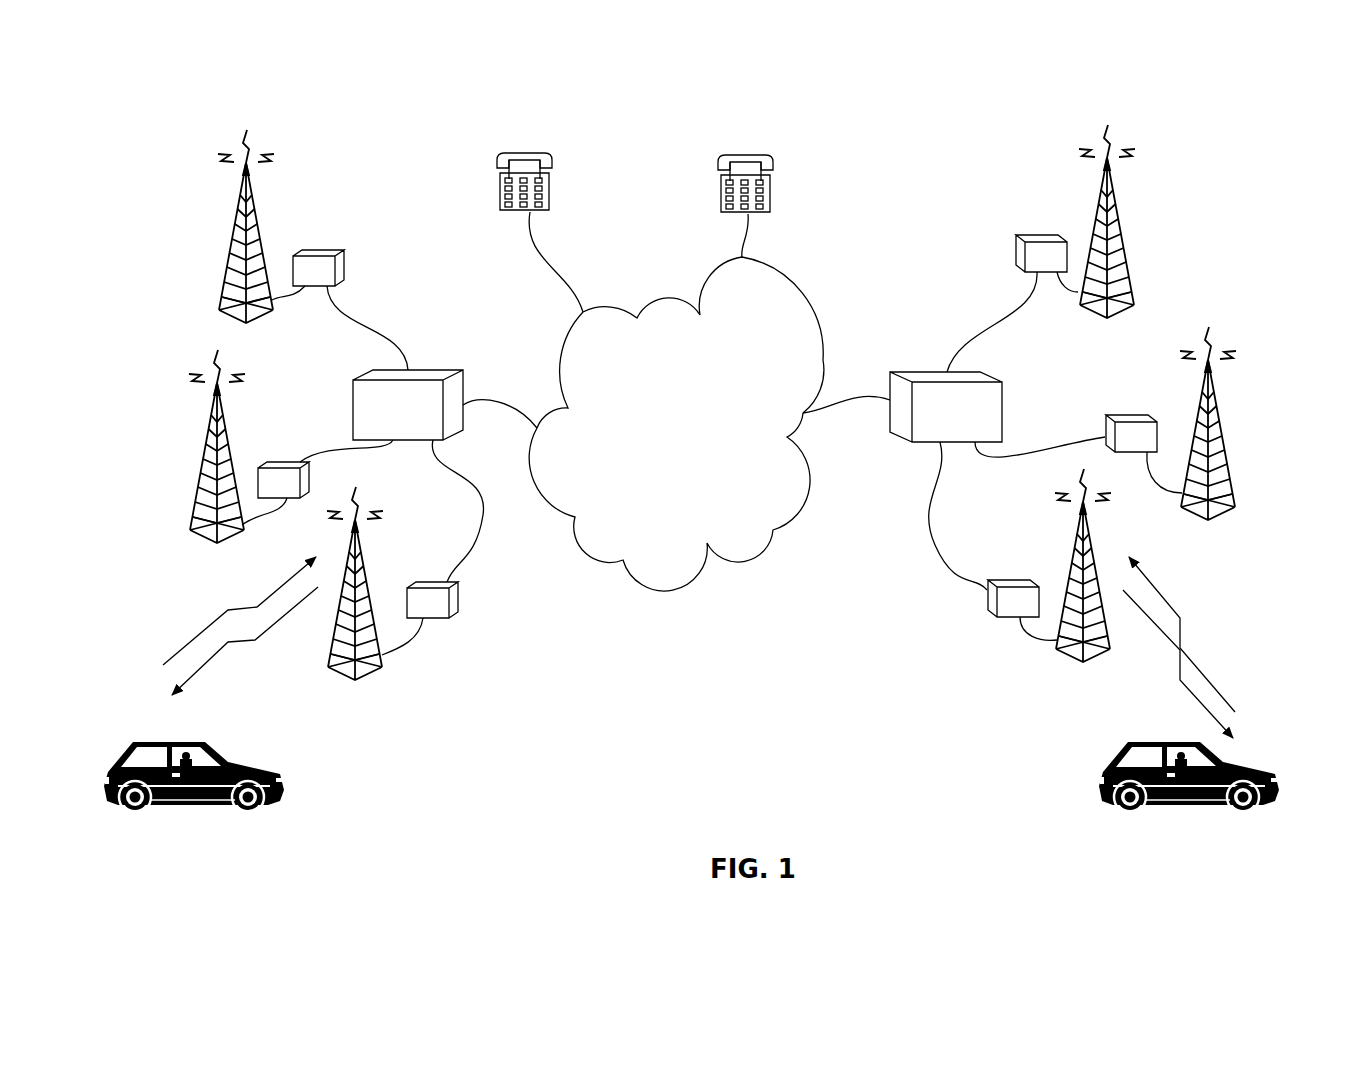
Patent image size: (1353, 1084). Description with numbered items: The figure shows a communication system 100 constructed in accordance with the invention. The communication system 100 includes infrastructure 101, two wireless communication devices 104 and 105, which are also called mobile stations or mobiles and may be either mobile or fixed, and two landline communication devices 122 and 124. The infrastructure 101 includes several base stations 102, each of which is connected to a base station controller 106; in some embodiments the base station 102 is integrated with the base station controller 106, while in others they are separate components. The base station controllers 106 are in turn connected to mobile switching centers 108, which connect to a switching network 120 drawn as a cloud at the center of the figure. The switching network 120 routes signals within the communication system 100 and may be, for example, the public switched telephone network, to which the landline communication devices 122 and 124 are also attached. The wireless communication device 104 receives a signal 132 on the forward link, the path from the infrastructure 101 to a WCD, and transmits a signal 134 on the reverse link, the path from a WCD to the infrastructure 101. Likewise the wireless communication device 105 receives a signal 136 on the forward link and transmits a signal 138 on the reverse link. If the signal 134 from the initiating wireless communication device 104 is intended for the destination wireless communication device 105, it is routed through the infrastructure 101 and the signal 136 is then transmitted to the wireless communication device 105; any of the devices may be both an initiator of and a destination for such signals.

The communication system 100 is at (1252, 96).
The infrastructure 101 is at (744, 672).
The base station 102 is at (232, 243).
The wireless communication device 104 is at (263, 808).
The wireless communication device 105 is at (1265, 805).
The base station controller 106 is at (345, 263).
The mobile switching center 108 is at (432, 368).
The switching network 120 is at (787, 295).
The landline communication device 122 is at (765, 155).
The landline communication device 124 is at (538, 152).
The signal 132 is at (262, 625).
The signal 134 is at (275, 578).
The signal 136 is at (1205, 697).
The signal 138 is at (1193, 647).